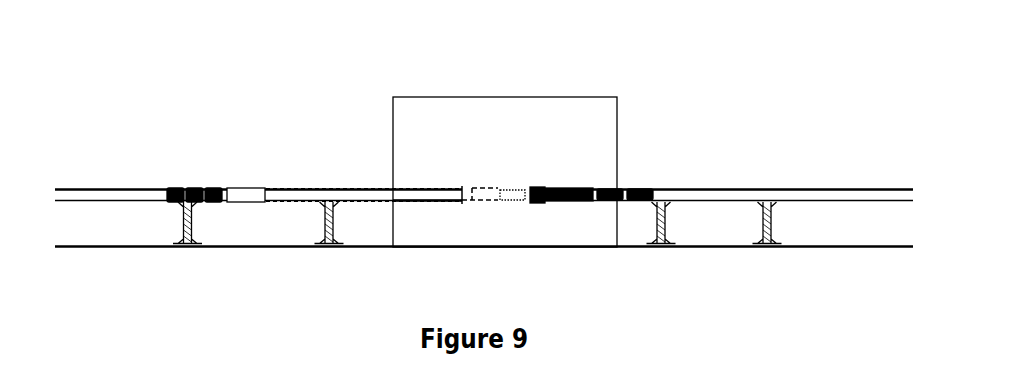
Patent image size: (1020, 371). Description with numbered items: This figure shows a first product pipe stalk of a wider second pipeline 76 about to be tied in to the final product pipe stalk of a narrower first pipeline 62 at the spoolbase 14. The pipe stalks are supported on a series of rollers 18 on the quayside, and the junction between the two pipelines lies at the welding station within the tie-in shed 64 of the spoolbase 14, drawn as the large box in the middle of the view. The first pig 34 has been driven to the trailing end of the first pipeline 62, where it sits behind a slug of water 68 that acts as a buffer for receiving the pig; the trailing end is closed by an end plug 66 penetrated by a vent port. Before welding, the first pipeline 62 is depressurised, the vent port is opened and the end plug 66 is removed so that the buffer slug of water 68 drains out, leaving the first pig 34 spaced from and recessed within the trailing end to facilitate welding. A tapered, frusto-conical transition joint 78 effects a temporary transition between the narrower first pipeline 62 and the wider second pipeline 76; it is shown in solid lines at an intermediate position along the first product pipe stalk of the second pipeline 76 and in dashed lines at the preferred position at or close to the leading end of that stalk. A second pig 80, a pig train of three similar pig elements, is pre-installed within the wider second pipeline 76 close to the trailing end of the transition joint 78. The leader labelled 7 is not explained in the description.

The deck panel 7 is at (133, 190).
The spoolbase 14 is at (663, 78).
The rollers 18 is at (182, 207).
The first pig 34 is at (641, 189).
The first pipeline 62 is at (823, 157).
The tie-in shed 64 is at (408, 97).
The end plug 66 is at (539, 189).
The slug of water 68 is at (572, 189).
The second pipeline 76 is at (80, 152).
The transition joint 78 is at (250, 196).
The second pig 80 is at (197, 186).